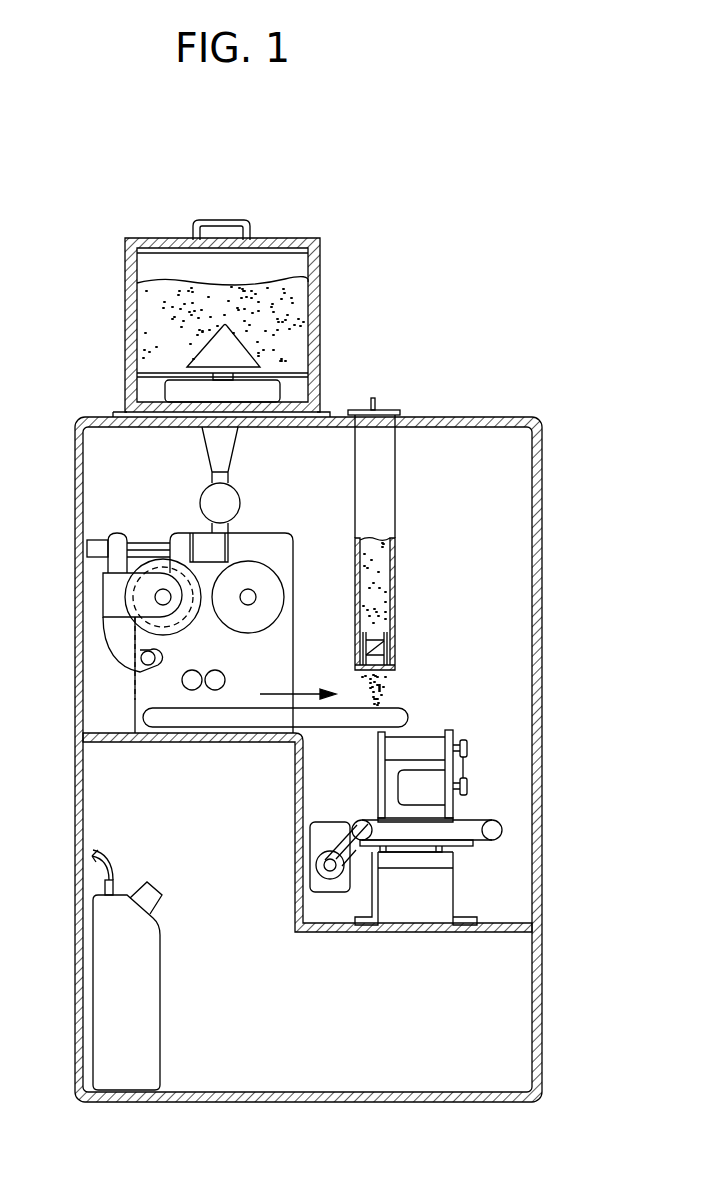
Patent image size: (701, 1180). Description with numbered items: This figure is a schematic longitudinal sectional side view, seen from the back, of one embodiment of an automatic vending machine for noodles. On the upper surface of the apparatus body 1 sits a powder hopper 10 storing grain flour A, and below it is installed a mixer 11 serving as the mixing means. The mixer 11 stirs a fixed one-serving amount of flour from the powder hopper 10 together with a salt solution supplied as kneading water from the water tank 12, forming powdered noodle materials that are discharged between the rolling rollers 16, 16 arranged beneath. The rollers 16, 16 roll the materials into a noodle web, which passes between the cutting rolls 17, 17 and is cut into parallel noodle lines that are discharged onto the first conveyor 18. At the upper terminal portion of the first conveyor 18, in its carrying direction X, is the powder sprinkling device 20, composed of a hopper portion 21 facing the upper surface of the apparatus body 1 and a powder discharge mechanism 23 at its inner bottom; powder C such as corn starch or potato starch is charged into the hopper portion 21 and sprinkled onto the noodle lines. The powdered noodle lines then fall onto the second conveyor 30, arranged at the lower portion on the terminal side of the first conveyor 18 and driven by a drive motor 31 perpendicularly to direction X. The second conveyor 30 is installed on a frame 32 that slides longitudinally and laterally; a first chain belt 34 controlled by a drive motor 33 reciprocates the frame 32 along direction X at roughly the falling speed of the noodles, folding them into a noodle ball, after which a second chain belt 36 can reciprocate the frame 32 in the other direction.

The apparatus body 1 is at (498, 414).
The powder hopper 10 is at (323, 287).
The grain flour A is at (142, 335).
The mixer 11 is at (203, 503).
The water tank 12 is at (107, 1013).
The rolling rollers 16 is at (158, 566).
The cutting rolls 17 is at (215, 690).
The first conveyor 18 is at (270, 728).
The powder sprinkling device 20 is at (428, 529).
The hopper portion 21 is at (378, 462).
The powder C is at (376, 583).
The powder discharge mechanism 23 is at (393, 650).
The second conveyor 30 is at (397, 746).
The drive motor 31 is at (415, 787).
The frame 32 is at (455, 812).
The drive motor 33 is at (330, 885).
The first chain belt 34 is at (480, 840).
The second chain belt 36 is at (425, 858).
The carrying direction X is at (298, 677).